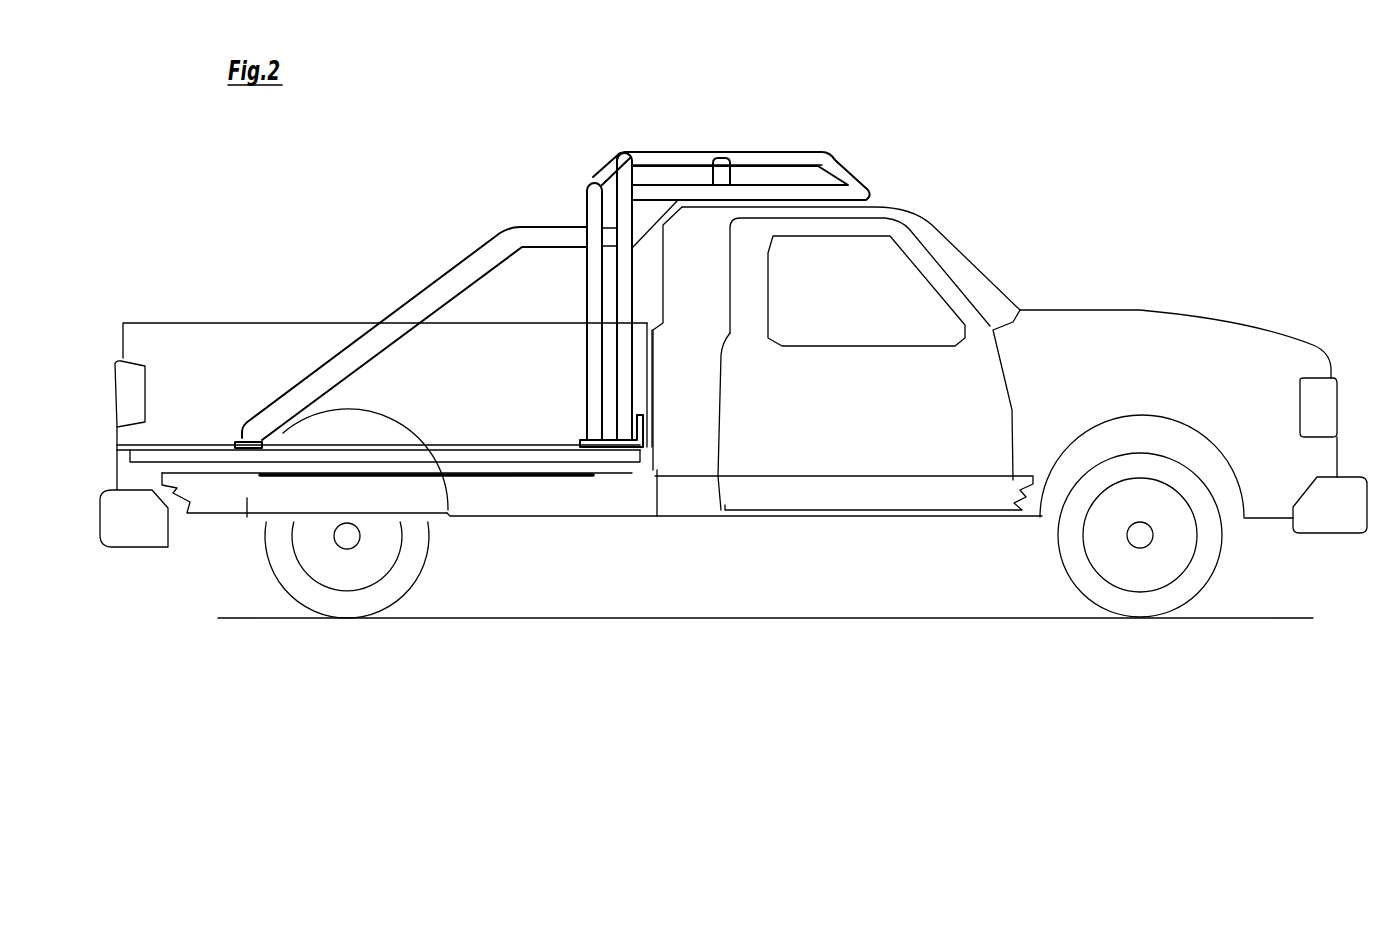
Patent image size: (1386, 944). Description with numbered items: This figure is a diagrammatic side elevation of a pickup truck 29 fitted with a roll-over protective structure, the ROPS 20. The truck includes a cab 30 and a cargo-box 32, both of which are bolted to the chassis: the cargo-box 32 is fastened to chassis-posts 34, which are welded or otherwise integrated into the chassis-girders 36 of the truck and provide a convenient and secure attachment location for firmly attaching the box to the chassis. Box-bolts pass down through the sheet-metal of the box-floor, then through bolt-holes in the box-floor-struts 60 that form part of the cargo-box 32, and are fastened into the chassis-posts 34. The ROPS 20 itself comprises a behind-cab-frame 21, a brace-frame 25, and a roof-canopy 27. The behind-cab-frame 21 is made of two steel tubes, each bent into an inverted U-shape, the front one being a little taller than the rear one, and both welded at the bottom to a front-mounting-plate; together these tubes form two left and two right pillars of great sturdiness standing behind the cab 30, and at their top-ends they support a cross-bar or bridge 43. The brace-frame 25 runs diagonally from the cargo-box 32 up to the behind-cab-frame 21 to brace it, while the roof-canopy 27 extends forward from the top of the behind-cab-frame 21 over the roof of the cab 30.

The ROPS 20 is at (532, 188).
The behind-cab-frame 21 is at (607, 320).
The brace-frame 25 is at (423, 293).
The roof-canopy 27 is at (765, 155).
The pickup truck 29 is at (1075, 328).
The cab 30 is at (870, 417).
The cargo-box 32 is at (264, 352).
The chassis-posts 34 is at (613, 470).
The chassis-girders 36 is at (562, 497).
The cross-bar or bridge 43 is at (607, 172).
The box-floor-struts 60 is at (452, 457).